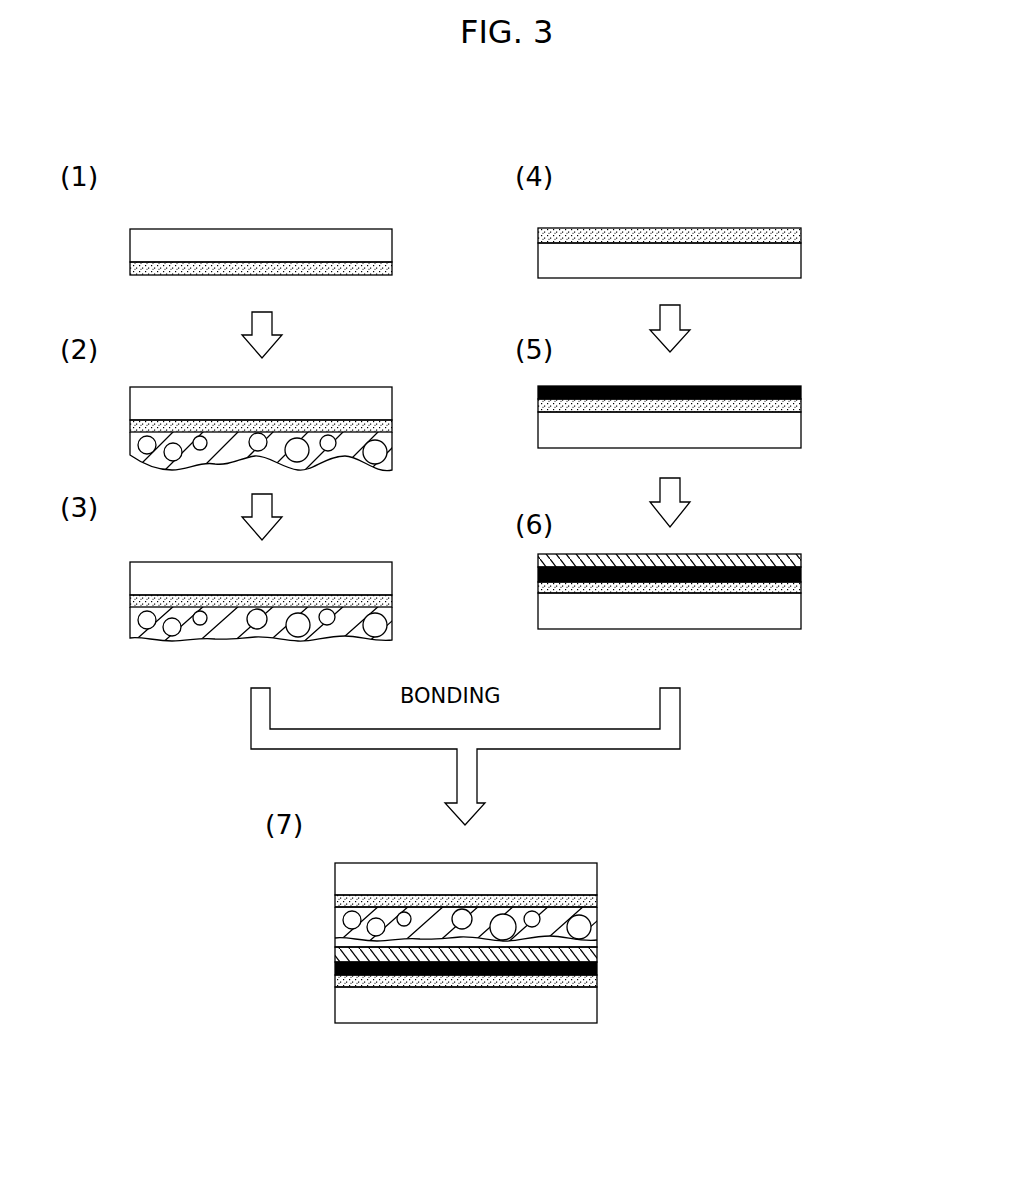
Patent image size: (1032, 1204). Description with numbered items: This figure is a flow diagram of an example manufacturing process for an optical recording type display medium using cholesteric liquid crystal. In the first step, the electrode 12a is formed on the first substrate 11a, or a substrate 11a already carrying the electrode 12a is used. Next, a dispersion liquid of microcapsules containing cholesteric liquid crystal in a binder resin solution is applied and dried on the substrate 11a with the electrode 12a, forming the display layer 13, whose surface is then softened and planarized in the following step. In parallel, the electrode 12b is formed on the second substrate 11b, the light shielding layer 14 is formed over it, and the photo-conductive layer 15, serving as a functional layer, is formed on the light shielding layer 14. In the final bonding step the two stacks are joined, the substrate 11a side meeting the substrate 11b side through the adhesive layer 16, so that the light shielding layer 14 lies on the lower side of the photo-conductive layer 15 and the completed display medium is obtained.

The substrate 11a is at (388, 245).
The electrode 12a is at (388, 270).
The display layer 13 is at (390, 440).
The substrate 11b is at (795, 263).
The electrode 12b is at (795, 236).
The light shielding layer 14 is at (795, 393).
The photo-conductive layer 15 is at (795, 560).
The adhesive layer 16 is at (592, 943).